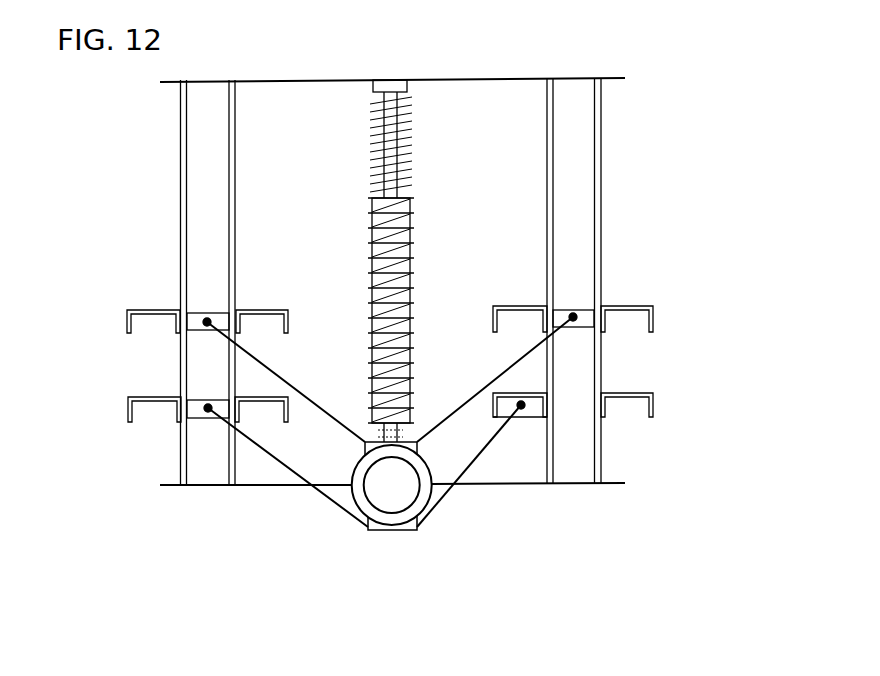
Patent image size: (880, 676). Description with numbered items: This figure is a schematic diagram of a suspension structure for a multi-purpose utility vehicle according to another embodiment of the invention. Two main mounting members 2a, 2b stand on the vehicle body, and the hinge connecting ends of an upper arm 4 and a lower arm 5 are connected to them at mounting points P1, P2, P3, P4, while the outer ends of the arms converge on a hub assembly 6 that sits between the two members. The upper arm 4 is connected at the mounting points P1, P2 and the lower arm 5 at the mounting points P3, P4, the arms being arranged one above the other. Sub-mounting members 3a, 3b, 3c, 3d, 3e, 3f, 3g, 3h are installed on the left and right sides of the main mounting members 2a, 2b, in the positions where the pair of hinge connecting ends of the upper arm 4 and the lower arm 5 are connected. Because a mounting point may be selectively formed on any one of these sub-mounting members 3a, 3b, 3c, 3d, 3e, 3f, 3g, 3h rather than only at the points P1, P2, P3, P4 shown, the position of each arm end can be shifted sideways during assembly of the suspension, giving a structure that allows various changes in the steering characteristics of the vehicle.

The main mounting member 2a is at (207, 178).
The main mounting member 2b is at (572, 160).
The sub-mounting member 3a is at (155, 309).
The sub-mounting member 3b is at (260, 309).
The sub-mounting member 3c is at (515, 305).
The sub-mounting member 3d is at (627, 305).
The sub-mounting member 3e is at (155, 397).
The sub-mounting member 3f is at (273, 407).
The sub-mounting member 3g is at (520, 393).
The sub-mounting member 3h is at (655, 403).
The upper arm 4 is at (290, 383).
The lower arm 5 is at (445, 493).
The hub assembly 6 is at (378, 516).
The mounting point P1 is at (207, 315).
The mounting point P2 is at (574, 312).
The mounting point P3 is at (208, 416).
The mounting point P4 is at (521, 410).